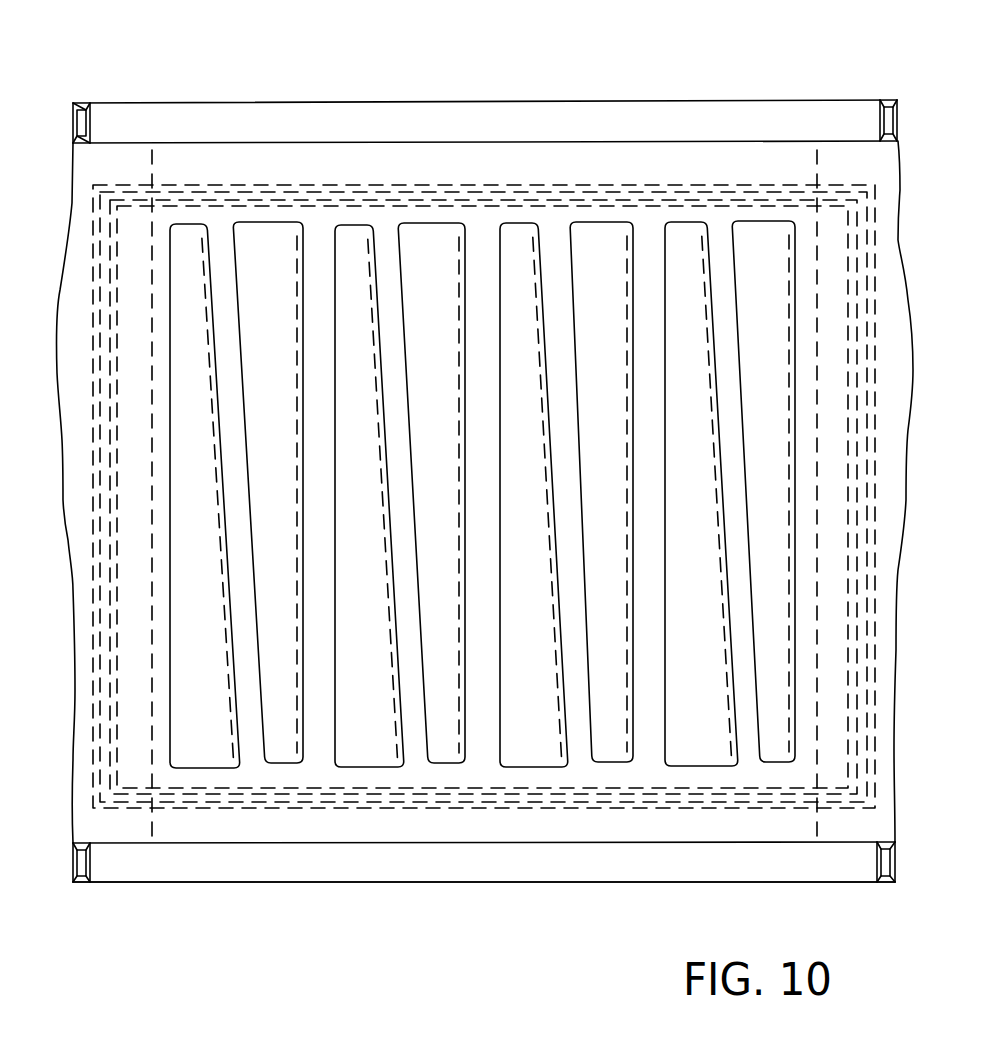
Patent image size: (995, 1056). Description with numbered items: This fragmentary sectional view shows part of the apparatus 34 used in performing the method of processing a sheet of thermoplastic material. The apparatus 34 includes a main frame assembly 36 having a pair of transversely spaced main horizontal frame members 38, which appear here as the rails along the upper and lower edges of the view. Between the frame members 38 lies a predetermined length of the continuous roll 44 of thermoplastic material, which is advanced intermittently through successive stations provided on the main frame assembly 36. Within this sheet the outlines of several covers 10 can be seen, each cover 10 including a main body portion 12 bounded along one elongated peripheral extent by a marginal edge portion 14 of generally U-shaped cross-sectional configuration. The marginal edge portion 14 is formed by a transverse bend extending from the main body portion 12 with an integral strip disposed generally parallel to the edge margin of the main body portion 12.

The apparatus 34 is at (764, 70).
The main horizontal frame members 38 is at (235, 117).
The main frame assembly 36 is at (236, 885).
The continuous roll of thermoplastic material 44 is at (300, 825).
The cover 10 is at (287, 216).
The main body portion 12 is at (755, 237).
The marginal edge portion 14 is at (410, 762).